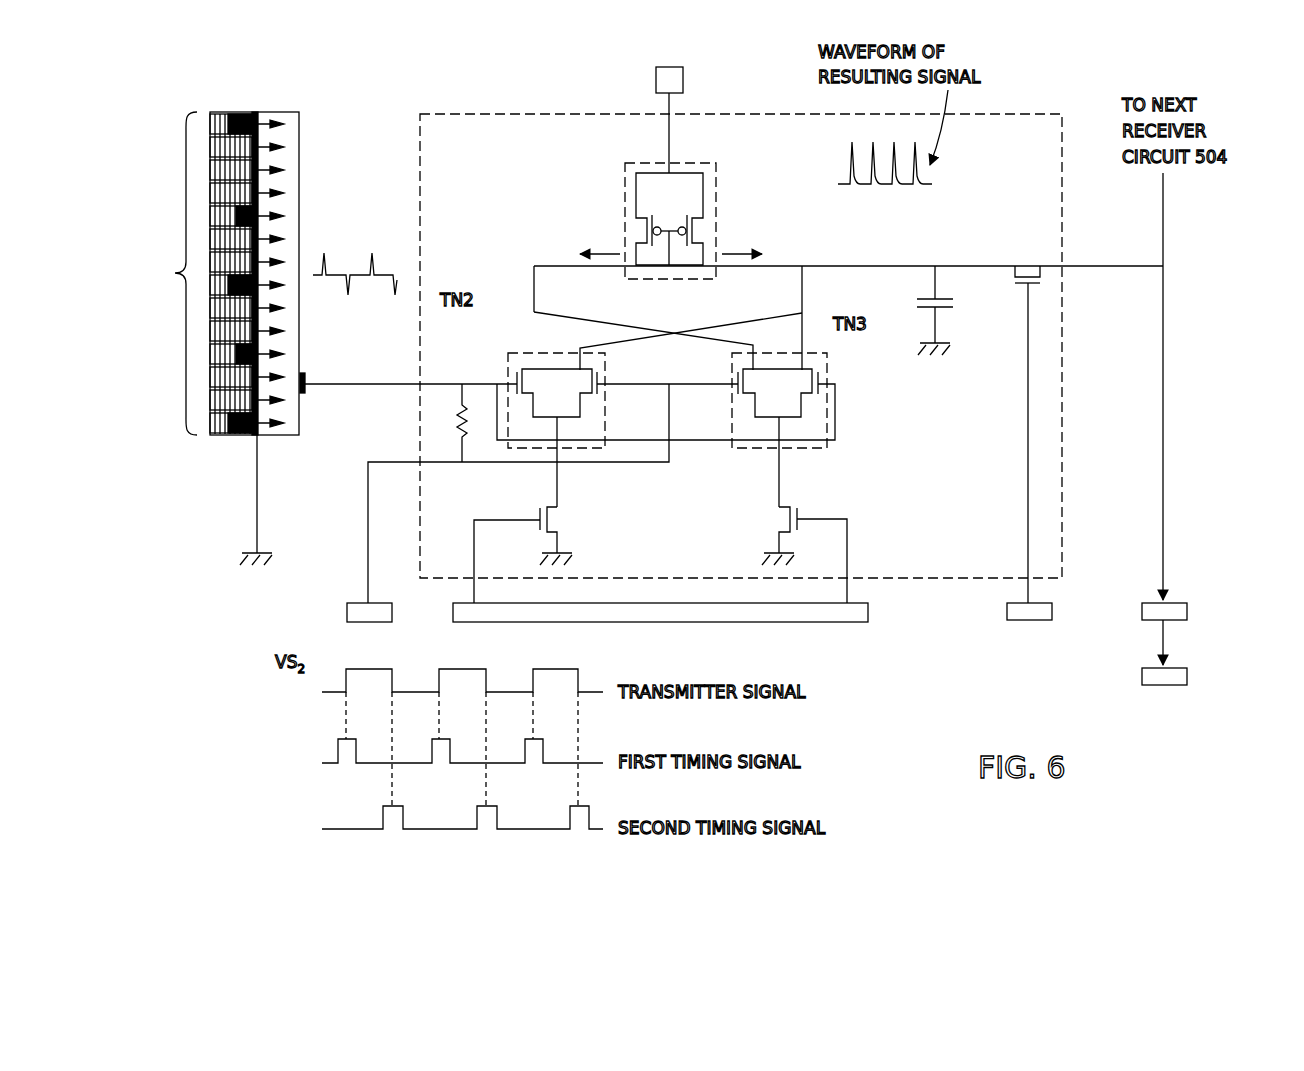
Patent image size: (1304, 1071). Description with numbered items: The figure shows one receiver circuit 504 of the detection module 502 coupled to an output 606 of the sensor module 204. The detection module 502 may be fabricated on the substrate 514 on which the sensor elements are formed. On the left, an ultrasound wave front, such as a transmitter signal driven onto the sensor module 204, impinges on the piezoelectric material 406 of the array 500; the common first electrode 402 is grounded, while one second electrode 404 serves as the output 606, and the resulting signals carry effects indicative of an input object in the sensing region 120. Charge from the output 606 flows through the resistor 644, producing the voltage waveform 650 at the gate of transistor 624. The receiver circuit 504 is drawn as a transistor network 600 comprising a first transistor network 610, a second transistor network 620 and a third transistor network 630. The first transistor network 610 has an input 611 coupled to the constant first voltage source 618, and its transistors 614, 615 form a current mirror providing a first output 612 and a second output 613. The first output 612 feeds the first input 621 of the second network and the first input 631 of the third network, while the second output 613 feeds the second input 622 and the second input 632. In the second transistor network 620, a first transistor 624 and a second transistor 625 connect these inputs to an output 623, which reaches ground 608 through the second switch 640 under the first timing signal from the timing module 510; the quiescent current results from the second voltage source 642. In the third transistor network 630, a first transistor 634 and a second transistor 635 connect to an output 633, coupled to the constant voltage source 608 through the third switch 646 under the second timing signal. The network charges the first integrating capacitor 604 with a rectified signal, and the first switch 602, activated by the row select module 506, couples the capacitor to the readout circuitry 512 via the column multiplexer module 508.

The sensing region 120 is at (152, 273).
The sensor module 204 is at (262, 236).
The first electrode 402 is at (257, 112).
The second electrode 404 is at (305, 388).
The piezoelectric material 406 is at (293, 133).
The array 500 is at (240, 95).
The detection module 502 is at (1024, 95).
The receiver circuit 504 is at (762, 110).
The row select module 506 is at (1030, 622).
The column multiplexer module 508 is at (1188, 612).
The timing module 510 is at (870, 611).
The readout circuitry 512 is at (1188, 680).
The substrate 514 is at (512, 133).
The transistor network 600 is at (526, 238).
The first switch 602 is at (1027, 260).
The first integrating capacitor 604 is at (940, 300).
The output 606 is at (316, 376).
The substantially constant voltage value 608 is at (262, 550).
The first transistor network 610 is at (678, 201).
The input 611 is at (668, 165).
The first output 612 is at (632, 268).
The second output 613 is at (712, 268).
The transistor 614 is at (648, 218).
The transistor 615 is at (690, 218).
The constant first voltage source 618 is at (655, 78).
The second transistor network 620 is at (525, 361).
The first input 621 is at (533, 368).
The second input 622 is at (578, 352).
The output 623 is at (557, 452).
The first transistor 624 is at (590, 383).
The second transistor 625 is at (553, 393).
The third transistor network 630 is at (804, 418).
The first input 631 is at (757, 345).
The second input 632 is at (805, 352).
The output 633 is at (772, 452).
The first transistor 634 is at (810, 383).
The second transistor 635 is at (776, 393).
The second switch 640 is at (563, 520).
The second voltage source 642 is at (347, 610).
The resistor 644 is at (455, 425).
The third switch 646 is at (807, 512).
The waveform 650 is at (350, 253).